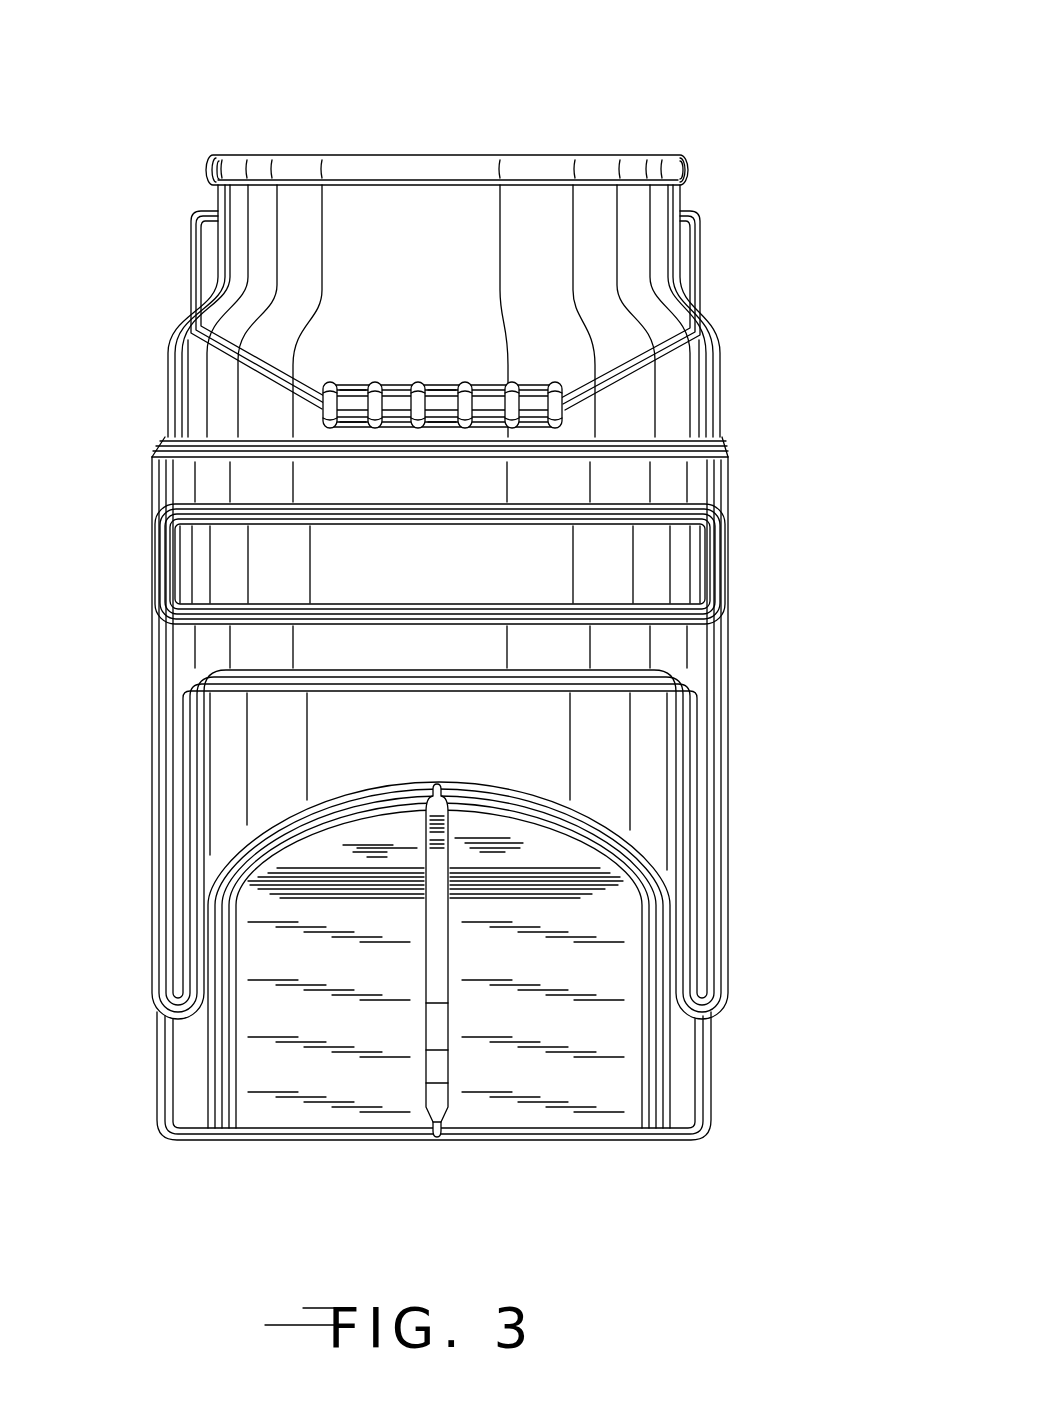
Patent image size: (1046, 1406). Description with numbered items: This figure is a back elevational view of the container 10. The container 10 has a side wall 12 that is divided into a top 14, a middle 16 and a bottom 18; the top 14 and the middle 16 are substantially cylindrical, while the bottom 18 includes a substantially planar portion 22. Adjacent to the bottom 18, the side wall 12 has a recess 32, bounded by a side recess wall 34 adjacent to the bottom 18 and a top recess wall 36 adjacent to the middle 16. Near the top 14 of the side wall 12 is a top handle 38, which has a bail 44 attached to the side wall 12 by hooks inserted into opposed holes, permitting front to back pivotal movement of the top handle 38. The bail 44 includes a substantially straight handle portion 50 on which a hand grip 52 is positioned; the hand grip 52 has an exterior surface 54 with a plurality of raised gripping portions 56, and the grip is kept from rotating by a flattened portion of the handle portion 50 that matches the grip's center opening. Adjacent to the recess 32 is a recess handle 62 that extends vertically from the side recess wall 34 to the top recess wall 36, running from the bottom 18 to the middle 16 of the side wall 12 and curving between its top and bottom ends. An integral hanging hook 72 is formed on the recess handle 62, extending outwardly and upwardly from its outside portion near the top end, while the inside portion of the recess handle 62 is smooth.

The container 10 is at (492, 620).
The side wall 12 is at (735, 493).
The top 14 is at (688, 172).
The middle 16 is at (732, 648).
The bottom 18 is at (710, 1113).
The substantially planar portion 22 is at (302, 1083).
The recess 32 is at (363, 1095).
The side recess wall 34 is at (530, 1080).
The top recess wall 36 is at (347, 830).
The top handle 38 is at (698, 273).
The bail 44 is at (700, 303).
The handle portion 50 is at (577, 387).
The hand grip 52 is at (392, 428).
The exterior surface 54 is at (490, 428).
The raised gripping portions 56 is at (373, 380).
The recess handle 62 is at (446, 961).
The integral hanging hook 72 is at (480, 813).